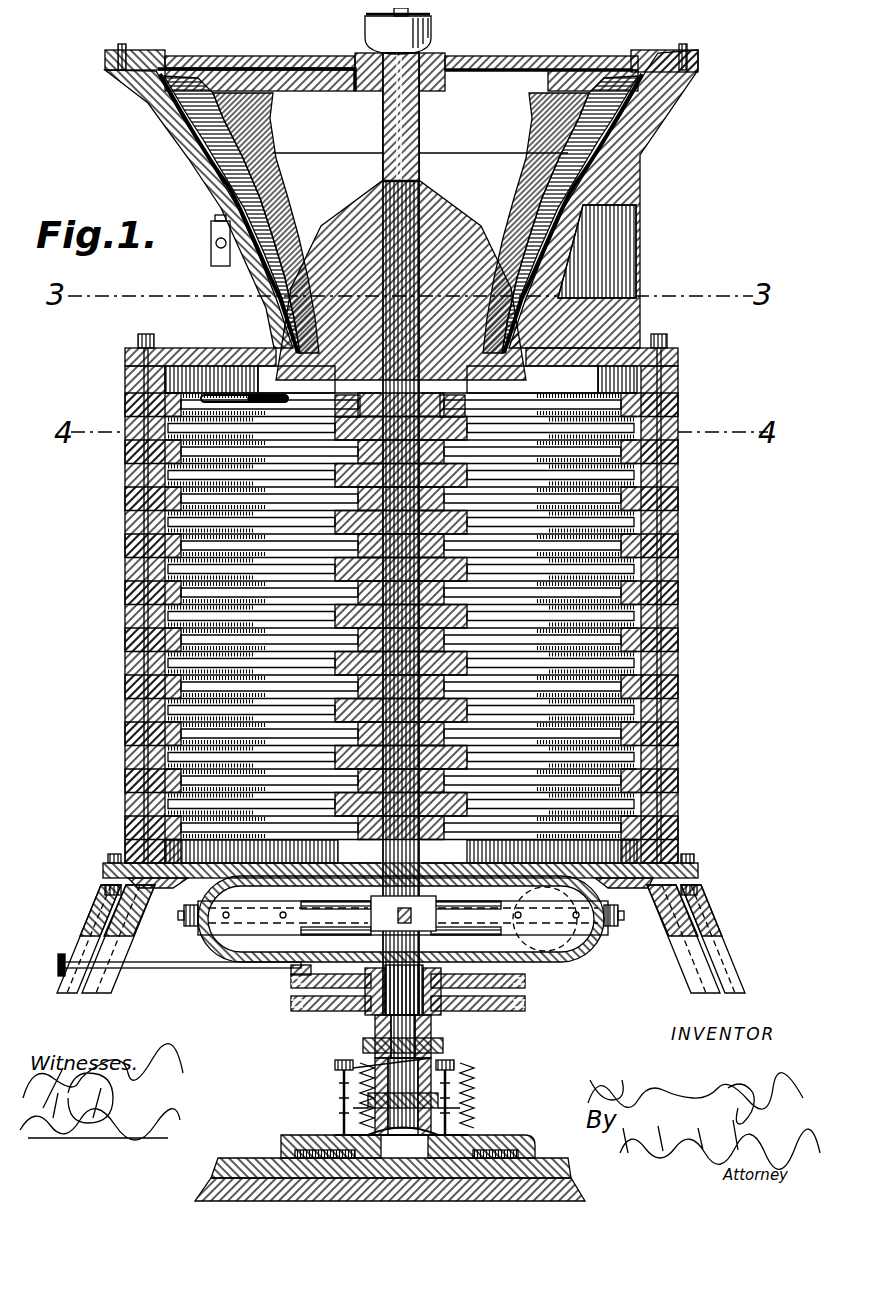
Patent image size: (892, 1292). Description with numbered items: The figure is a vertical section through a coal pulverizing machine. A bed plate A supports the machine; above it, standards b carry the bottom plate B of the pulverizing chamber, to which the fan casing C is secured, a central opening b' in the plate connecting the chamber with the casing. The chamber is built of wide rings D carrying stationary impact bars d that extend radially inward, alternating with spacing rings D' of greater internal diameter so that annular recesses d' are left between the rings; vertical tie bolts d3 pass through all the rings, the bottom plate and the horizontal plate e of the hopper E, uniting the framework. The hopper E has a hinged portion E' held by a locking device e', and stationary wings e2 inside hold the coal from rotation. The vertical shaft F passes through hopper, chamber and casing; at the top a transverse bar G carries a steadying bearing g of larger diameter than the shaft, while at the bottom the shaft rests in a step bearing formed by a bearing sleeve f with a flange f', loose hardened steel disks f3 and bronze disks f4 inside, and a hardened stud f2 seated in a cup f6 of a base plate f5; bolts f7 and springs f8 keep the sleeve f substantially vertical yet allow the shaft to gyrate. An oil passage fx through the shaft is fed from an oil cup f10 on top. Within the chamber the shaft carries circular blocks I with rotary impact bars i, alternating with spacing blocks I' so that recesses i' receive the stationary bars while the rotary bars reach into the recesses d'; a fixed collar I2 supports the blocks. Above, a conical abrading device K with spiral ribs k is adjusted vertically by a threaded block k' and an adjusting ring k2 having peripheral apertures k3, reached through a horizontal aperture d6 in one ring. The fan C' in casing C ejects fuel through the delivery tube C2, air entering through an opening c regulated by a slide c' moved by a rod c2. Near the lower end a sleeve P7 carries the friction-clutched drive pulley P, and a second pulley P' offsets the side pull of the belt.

The oil cup f10 is at (378, 22).
The steadying bearing g is at (412, 58).
The transverse bar G is at (557, 50).
The stationary inwardly projecting wings e2 is at (240, 133).
The central longitudinal oil passage fx is at (374, 120).
The vertical shaft F is at (412, 113).
The hopper E is at (401, 199).
The hinged portion E' is at (420, 175).
The conical abrading device K is at (433, 210).
The locking device e' is at (200, 236).
The spiral abrading ribs k is at (401, 213).
The horizontal plate e is at (402, 580).
The vertical tie bolts d3 is at (137, 360).
The horizontal aperture d6 is at (213, 373).
The stationary impact bars d is at (408, 606).
The wide rings D is at (404, 628).
The spacing rings D' is at (409, 616).
The annular grooves or recesses d' is at (408, 628).
The adjusting ring k2 is at (330, 390).
The apertures k3 is at (460, 392).
The block k' is at (330, 417).
The rotary impact bars i is at (401, 619).
The annular recesses i' is at (366, 496).
The circular blocks I is at (532, 619).
The circular spacing blocks I' is at (387, 819).
The fixed collar I2 is at (355, 820).
The bottom plate B is at (627, 860).
The standards b is at (414, 939).
The central opening b' is at (429, 905).
The adjustable regulating slide c' is at (403, 934).
The fan C' is at (215, 955).
The delivery tube C2 is at (585, 958).
The rod c2 is at (179, 979).
The air inlet opening c is at (283, 994).
The fan casing C is at (411, 932).
The pulley P is at (415, 990).
The second pulley P' is at (498, 1004).
The sleeve P7 is at (330, 997).
The bearing sleeve f is at (434, 1070).
The bolts f7 is at (327, 1060).
The springs f8 is at (327, 1075).
The bronze disks f4 is at (370, 1041).
The removable stud f2 is at (345, 1090).
The hardened steel disks f3 is at (470, 1067).
The laterally extending flange f' is at (432, 1092).
The removable hardened cup f6 is at (327, 1127).
The base plate f5 is at (523, 1134).
The bed plate A is at (220, 1150).